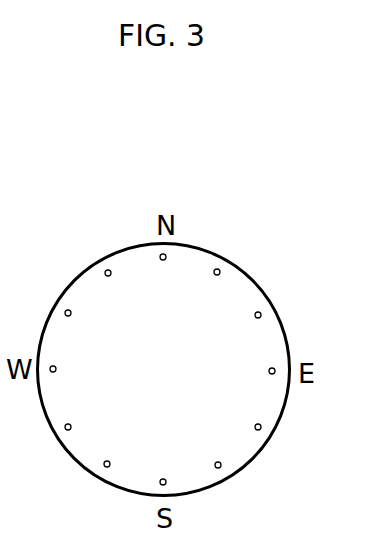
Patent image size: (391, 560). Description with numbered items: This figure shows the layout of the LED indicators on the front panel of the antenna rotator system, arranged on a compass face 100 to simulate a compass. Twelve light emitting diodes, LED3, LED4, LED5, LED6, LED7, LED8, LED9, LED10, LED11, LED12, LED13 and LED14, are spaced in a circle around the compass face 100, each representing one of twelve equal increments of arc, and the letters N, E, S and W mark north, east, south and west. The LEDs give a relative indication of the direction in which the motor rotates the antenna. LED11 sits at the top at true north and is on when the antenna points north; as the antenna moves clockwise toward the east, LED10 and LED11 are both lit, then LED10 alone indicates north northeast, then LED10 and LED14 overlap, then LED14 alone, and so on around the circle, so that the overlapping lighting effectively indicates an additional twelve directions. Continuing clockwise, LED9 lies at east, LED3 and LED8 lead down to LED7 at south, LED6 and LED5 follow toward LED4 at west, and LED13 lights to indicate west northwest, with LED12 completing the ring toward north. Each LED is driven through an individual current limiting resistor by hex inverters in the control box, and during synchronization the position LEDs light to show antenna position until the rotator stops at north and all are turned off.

The compass face 100 is at (235, 258).
The light emitting diode LED3 is at (256, 424).
The light emitting diode LED4 is at (60, 363).
The light emitting diode LED5 is at (71, 426).
The light emitting diode LED6 is at (105, 462).
The light emitting diode LED7 is at (160, 481).
The light emitting diode LED8 is at (216, 462).
The light emitting diode LED9 is at (270, 369).
The light emitting diode LED10 is at (218, 275).
The light emitting diode LED11 is at (160, 260).
The light emitting diode LED12 is at (106, 276).
The light emitting diode LED13 is at (68, 316).
The light emitting diode LED14 is at (256, 318).